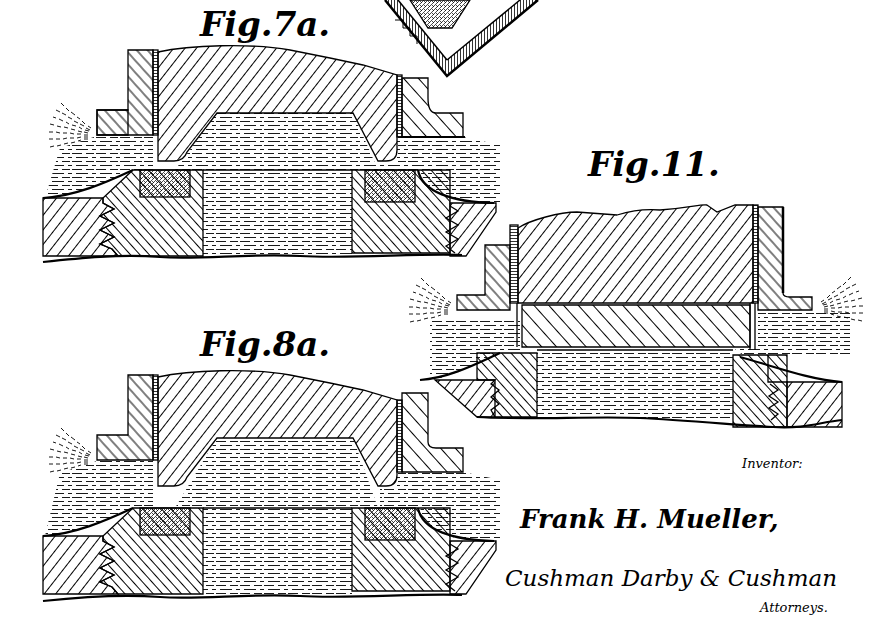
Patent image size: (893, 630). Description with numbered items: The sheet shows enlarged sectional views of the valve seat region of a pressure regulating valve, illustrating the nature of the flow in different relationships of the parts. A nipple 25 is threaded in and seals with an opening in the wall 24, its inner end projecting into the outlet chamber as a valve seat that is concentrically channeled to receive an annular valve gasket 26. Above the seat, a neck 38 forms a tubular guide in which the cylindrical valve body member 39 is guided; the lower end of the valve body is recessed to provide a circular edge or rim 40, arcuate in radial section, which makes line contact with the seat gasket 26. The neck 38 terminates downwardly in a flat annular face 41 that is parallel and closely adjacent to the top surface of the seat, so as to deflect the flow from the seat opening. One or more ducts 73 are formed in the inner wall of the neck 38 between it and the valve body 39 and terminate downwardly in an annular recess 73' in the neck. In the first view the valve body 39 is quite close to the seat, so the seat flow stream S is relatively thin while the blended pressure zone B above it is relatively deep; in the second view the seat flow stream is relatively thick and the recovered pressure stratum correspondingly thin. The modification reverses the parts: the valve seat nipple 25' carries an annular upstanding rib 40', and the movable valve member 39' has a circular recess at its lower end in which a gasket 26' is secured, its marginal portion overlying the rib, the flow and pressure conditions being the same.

In FIG. 7A, the wall 24 is at (85, 243).
In FIG. 8A, the wall 24 is at (78, 577).
In FIG. 11, the wall 24 is at (803, 407).
In FIG. 7A, the nipple 25 is at (275, 232).
In FIG. 8A, the nipple 25 is at (275, 564).
In FIG. 11, the valve seat nipple 25' is at (632, 404).
In FIG. 7A, the annular valve gasket 26 is at (277, 226).
In FIG. 11, the gasket 26' is at (636, 271).
In FIG. 7A, the neck 38 is at (143, 51).
In FIG. 8A, the neck 38 is at (137, 392).
In FIG. 11, the neck 38 is at (773, 264).
In FIG. 7A, the valve body member 39 is at (277, 93).
In FIG. 8A, the valve body member 39 is at (280, 420).
In FIG. 11, the movable valve member 39' is at (649, 240).
In FIG. 7A, the circular edge or rim 40 is at (290, 224).
In FIG. 11, the annular upstanding rib 40' is at (637, 402).
In FIG. 7A, the flat annular face 41 is at (467, 134).
In FIG. 7A, the duct 73 is at (119, 89).
In FIG. 11, the duct 73 is at (668, 251).
In FIG. 7A, the annular recess 73' is at (93, 110).
In FIG. 7A, the blended pressure zone B is at (432, 107).
In FIG. 8A, the blended pressure zone B is at (432, 432).
In FIG. 7A, the seat flow stream S is at (432, 190).
In FIG. 8A, the seat flow stream S is at (432, 525).